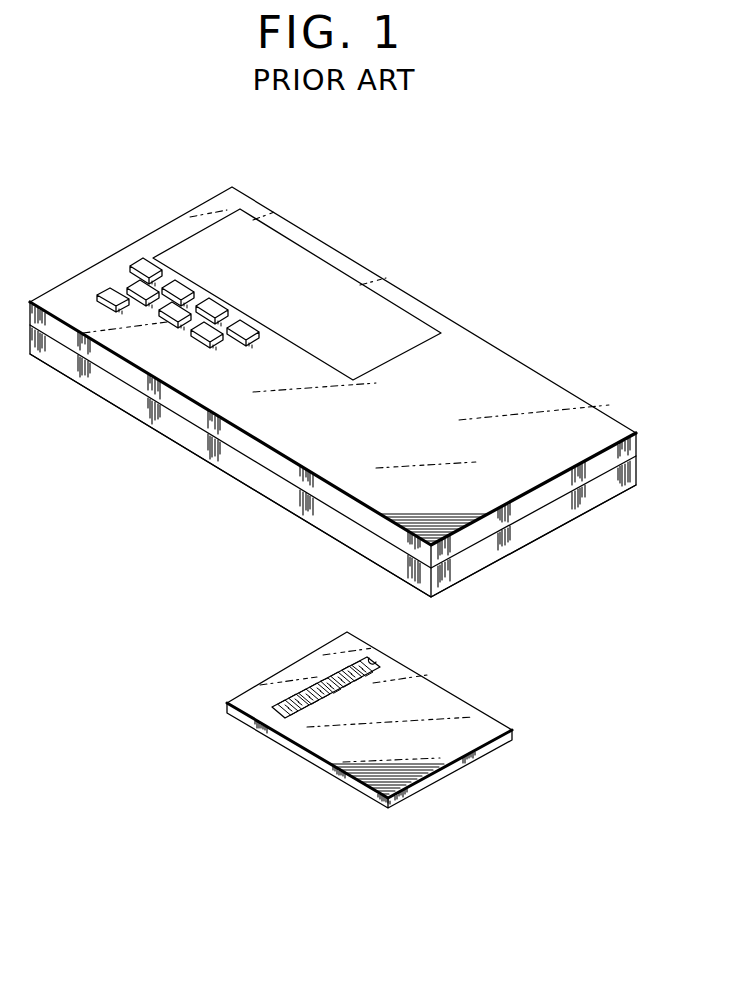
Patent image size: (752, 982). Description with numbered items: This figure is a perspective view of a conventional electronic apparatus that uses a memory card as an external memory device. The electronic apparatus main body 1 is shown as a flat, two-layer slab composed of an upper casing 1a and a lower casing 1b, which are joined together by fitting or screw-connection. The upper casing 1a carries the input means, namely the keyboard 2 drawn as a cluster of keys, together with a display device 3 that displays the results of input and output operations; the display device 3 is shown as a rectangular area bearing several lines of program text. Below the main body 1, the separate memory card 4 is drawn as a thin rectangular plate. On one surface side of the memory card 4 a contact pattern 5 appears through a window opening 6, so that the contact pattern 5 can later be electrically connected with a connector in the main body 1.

The electronic apparatus main body 1 is at (233, 529).
The upper casing 1a is at (200, 422).
The lower casing 1b is at (227, 458).
The keyboard 2 is at (92, 287).
The display device 3 is at (167, 252).
The memory card 4 is at (483, 725).
The contact pattern 5 is at (328, 680).
The window opening 6 is at (376, 662).